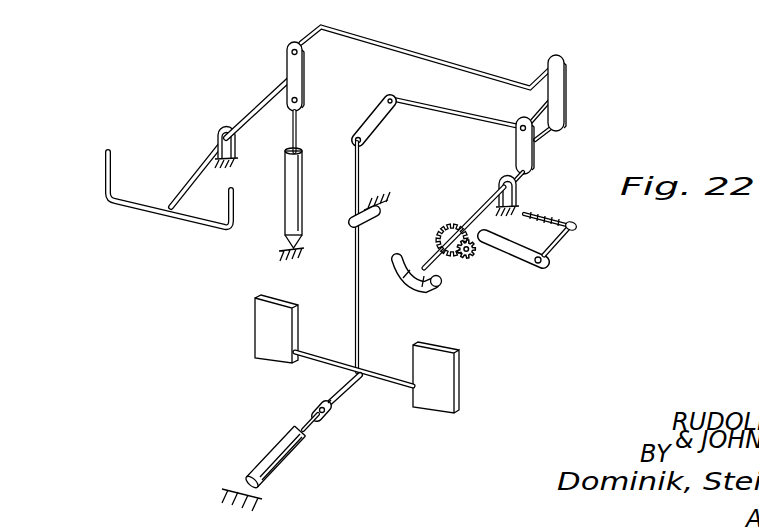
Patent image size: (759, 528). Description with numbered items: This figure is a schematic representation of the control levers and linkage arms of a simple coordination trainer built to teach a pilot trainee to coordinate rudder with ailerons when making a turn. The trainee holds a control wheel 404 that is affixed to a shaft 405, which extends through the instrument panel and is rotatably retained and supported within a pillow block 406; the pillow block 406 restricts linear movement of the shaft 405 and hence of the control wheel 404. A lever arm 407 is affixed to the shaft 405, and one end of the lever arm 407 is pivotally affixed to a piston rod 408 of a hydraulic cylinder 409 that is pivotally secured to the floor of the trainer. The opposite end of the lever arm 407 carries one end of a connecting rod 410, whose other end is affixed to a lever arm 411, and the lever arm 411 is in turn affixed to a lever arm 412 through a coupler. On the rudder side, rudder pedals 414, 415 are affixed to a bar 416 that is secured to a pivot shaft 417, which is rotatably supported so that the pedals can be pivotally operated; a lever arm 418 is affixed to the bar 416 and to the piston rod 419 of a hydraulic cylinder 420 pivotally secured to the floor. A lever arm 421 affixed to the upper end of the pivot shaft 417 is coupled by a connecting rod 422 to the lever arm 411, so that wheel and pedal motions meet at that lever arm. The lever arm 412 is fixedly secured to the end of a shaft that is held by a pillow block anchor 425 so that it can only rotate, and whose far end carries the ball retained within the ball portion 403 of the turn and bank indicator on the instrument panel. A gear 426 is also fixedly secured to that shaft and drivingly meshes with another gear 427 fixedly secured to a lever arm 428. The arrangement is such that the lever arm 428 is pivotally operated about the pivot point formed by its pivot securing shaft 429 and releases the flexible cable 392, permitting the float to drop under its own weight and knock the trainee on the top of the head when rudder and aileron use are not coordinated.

The flexible cable 392 is at (543, 208).
The ball portion of turn and bank indicator 403 is at (431, 288).
The control wheel 404 is at (126, 194).
The shaft 405 is at (264, 103).
The pillow block 406 is at (221, 131).
The lever arm 407 is at (287, 56).
The piston rod 408 is at (300, 129).
The hydraulic cylinder 409 is at (302, 205).
The connecting rod 410 is at (413, 51).
The lever arm 411 is at (558, 84).
The lever arm 412 is at (536, 152).
The rudder pedal 414 is at (272, 335).
The rudder pedal 415 is at (442, 407).
The bar 416 is at (394, 388).
The pivot shaft 417 is at (360, 338).
The lever arm 418 is at (347, 395).
The piston rod 419 is at (313, 418).
The hydraulic cylinder 420 is at (268, 460).
The lever arm 421 is at (375, 134).
The connecting rod 422 is at (463, 108).
The pillow block anchor 425 is at (519, 199).
The gear 426 is at (442, 222).
The gear 427 is at (487, 257).
The lever arm 428 is at (559, 236).
The pivot securing shaft 429 is at (470, 260).